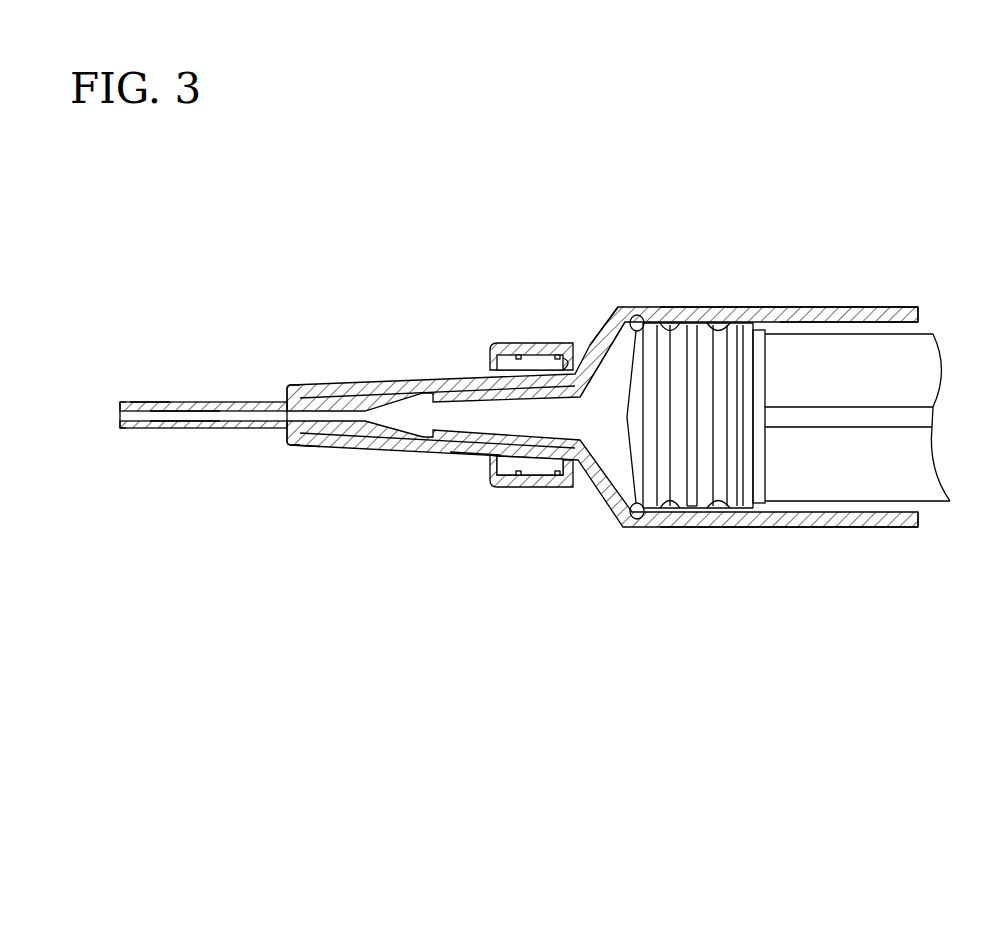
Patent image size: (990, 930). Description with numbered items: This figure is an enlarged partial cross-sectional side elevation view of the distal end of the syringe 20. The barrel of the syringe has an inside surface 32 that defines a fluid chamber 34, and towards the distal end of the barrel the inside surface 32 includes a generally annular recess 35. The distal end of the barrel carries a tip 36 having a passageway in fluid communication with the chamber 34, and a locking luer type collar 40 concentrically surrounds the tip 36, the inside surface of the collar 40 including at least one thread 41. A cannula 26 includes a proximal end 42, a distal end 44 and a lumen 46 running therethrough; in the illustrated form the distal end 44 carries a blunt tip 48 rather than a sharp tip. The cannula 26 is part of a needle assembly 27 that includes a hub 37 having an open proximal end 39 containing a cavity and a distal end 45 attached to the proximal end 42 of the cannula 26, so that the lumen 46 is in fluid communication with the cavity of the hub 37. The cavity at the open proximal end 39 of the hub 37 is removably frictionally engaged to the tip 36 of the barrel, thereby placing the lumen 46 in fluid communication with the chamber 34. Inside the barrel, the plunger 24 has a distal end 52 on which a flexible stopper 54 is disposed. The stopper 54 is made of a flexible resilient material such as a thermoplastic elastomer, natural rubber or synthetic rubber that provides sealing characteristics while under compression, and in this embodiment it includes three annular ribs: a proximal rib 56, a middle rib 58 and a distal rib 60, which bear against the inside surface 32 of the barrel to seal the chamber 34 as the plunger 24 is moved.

The syringe 20 is at (890, 525).
The plunger 24 is at (897, 346).
The cannula 26 is at (190, 426).
The needle assembly 27 is at (340, 386).
The inside surface 32 is at (840, 320).
The fluid chamber 34 is at (618, 397).
The annular recess 35 is at (585, 357).
The tip 36 is at (473, 440).
The hub 37 is at (391, 458).
The open proximal end 39 is at (548, 460).
The locking luer type collar 40 is at (545, 350).
The thread 41 is at (500, 368).
The proximal end 42 is at (273, 400).
The distal end 44 is at (147, 400).
The distal end 45 is at (300, 447).
The lumen 46 is at (192, 417).
The blunt tip 48 is at (120, 398).
The distal end 52 is at (792, 473).
The flexible stopper 54 is at (707, 377).
The proximal rib 56 is at (743, 505).
The middle rib 58 is at (692, 505).
The distal rib 60 is at (660, 505).